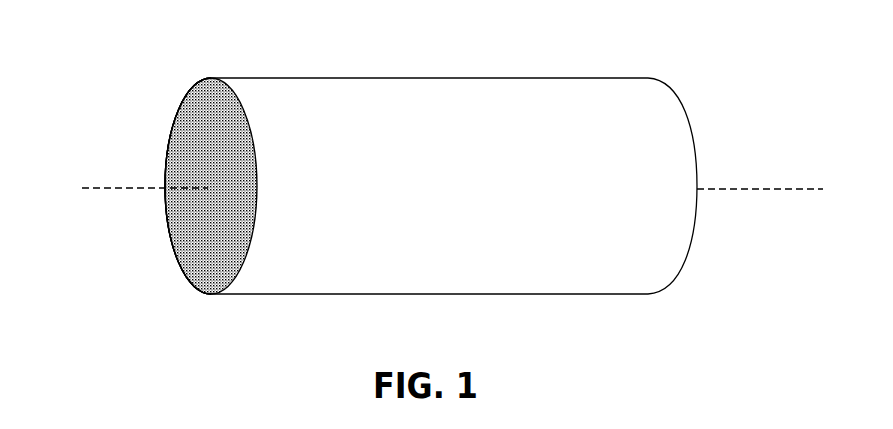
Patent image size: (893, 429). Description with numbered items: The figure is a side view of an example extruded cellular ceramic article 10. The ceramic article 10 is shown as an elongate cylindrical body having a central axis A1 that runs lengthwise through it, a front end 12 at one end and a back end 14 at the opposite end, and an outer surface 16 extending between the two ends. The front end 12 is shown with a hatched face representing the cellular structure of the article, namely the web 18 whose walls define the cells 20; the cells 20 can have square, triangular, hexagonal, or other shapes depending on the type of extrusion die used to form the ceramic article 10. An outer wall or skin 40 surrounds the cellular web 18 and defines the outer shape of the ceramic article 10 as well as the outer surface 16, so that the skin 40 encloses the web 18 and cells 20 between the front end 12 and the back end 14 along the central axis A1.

The cellular ceramic article 10 is at (178, 50).
The front end 12 is at (197, 280).
The back end 14 is at (683, 252).
The outer surface 16 is at (383, 103).
The web 18 is at (192, 138).
The cells 20 is at (188, 186).
The outer wall or skin 40 is at (164, 156).
The central axis A1 is at (101, 188).